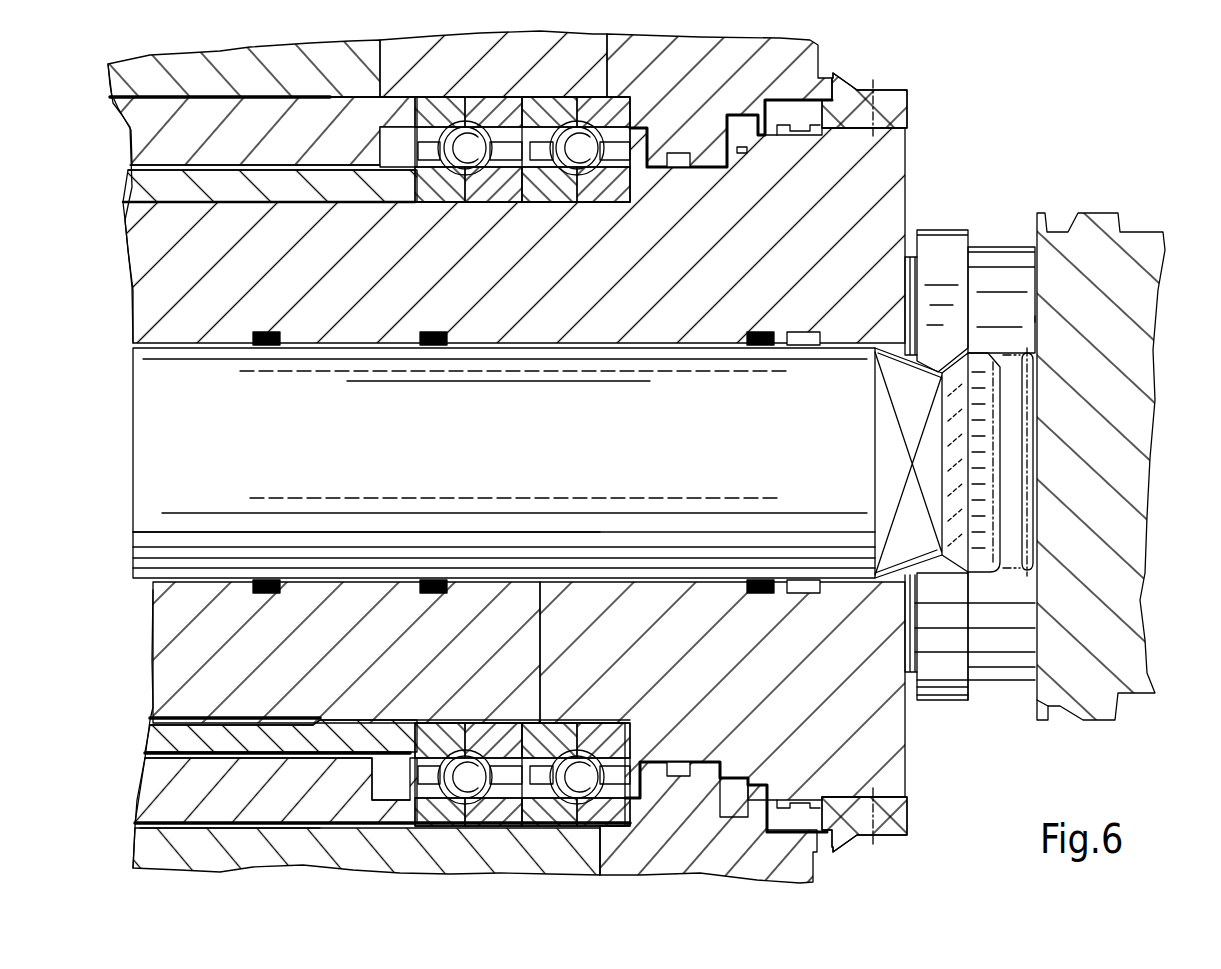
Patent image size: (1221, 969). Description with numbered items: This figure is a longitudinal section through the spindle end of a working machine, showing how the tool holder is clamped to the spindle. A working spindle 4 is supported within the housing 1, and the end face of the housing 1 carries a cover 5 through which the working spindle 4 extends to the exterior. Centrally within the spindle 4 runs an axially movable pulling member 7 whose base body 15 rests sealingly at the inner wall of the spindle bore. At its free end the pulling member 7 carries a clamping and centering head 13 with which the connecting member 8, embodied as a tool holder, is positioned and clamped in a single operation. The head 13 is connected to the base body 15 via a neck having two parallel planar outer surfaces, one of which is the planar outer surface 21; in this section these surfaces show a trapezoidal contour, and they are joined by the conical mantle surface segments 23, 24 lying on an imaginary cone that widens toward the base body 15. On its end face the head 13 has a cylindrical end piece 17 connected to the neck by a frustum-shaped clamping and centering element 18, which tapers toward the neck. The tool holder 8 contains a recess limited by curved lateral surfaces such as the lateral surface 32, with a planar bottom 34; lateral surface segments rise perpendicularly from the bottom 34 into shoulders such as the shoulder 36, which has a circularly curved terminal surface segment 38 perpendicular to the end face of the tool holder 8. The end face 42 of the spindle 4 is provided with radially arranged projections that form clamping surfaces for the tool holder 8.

The housing 1 is at (118, 97).
The working spindle 4 is at (905, 100).
The cover 5 is at (782, 57).
The end face 42 is at (905, 135).
The pulling member 7 is at (177, 566).
The pulling member base body 15 is at (142, 550).
The planar outer surface 21 is at (915, 388).
The conical mantle surface segment 23 is at (938, 378).
The clamping and centering element 18 is at (973, 350).
The cylindrical end piece 17 is at (992, 357).
The bottom 34 is at (1035, 318).
The connecting member 8 is at (1138, 665).
The conical mantle surface segment 24 is at (923, 690).
The terminal surface segment 38 is at (948, 673).
The clamping and centering head 13 is at (962, 575).
The shoulder 36 is at (968, 595).
The lateral surface 32 is at (1048, 712).